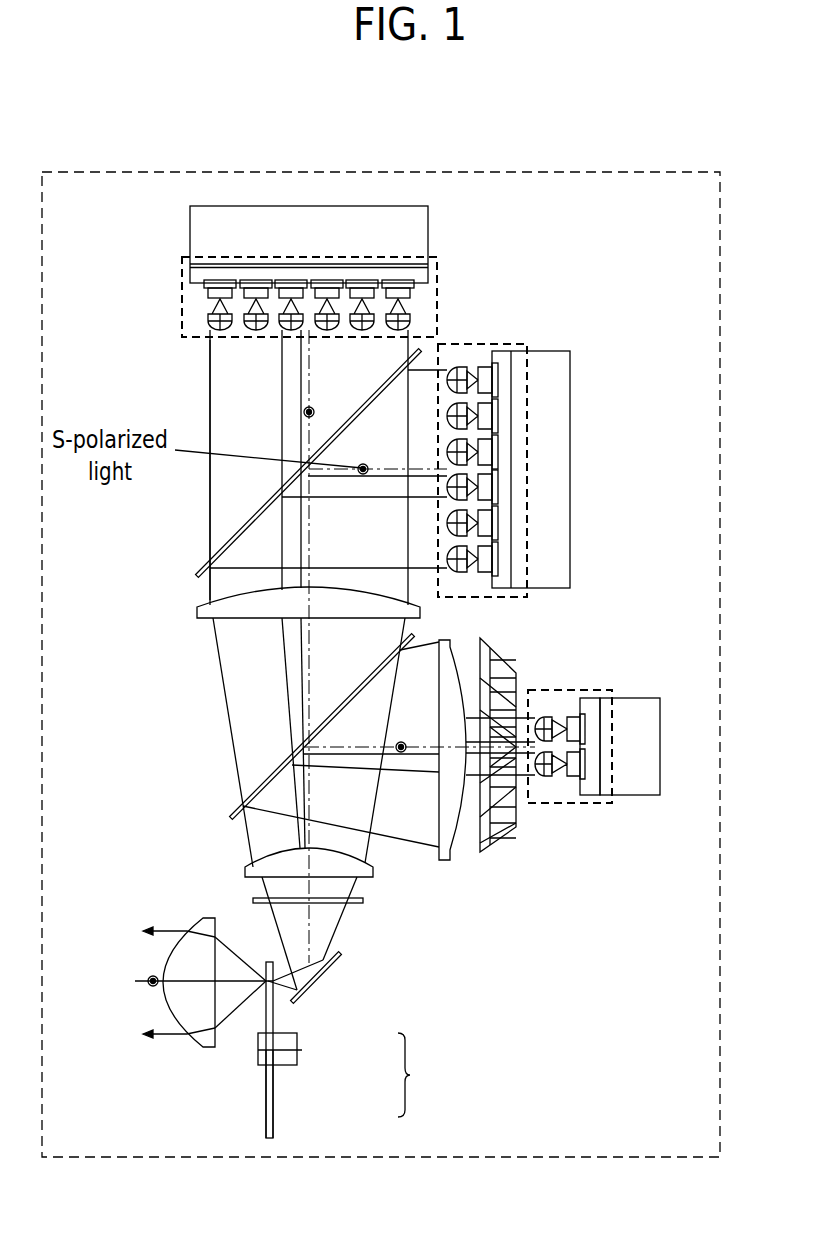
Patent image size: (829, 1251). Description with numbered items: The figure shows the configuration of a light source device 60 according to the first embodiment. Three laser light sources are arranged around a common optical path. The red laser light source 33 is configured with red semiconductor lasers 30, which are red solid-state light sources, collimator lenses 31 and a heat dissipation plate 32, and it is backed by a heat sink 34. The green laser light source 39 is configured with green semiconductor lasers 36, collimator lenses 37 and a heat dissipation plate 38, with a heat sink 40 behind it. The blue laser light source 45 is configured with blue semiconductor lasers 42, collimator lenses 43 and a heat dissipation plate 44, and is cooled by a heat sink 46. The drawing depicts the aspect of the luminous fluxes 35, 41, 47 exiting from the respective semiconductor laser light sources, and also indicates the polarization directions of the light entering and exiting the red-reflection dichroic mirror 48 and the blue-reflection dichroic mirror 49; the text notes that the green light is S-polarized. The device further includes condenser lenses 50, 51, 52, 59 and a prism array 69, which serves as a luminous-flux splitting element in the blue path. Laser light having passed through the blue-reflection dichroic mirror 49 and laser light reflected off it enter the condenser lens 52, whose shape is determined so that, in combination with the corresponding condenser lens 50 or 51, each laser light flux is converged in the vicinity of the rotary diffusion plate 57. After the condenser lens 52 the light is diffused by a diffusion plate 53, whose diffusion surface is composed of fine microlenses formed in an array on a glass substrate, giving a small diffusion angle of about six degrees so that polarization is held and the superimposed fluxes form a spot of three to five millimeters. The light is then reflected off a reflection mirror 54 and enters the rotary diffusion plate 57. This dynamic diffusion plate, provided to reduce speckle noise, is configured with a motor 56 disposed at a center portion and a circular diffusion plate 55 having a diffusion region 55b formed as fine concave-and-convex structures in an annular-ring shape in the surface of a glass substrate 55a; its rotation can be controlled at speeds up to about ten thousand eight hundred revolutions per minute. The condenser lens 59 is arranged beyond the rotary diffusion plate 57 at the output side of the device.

The red semiconductor lasers 30 is at (484, 572).
The collimator lenses 31 is at (458, 568).
The heat dissipation plate 32 is at (502, 565).
The red laser light source 33 is at (475, 342).
The heat sink 34 is at (557, 372).
The luminous flux 35 is at (353, 490).
The green semiconductor lasers 36 is at (412, 293).
The collimator lenses 37 is at (412, 318).
The heat dissipation plate 38 is at (422, 270).
The green laser light source 39 is at (177, 288).
The heat sink 40 is at (418, 218).
The luminous flux 41 is at (288, 430).
The blue semiconductor lasers 42 is at (573, 782).
The collimator lenses 43 is at (548, 778).
The heat dissipation plate 44 is at (590, 787).
The blue laser light source 45 is at (567, 688).
The heat sink 46 is at (633, 712).
The luminous flux 47 is at (519, 783).
The red-reflection dichroic mirror 48 is at (197, 568).
The blue-reflection dichroic mirror 49 is at (240, 810).
The condenser lens 50 is at (197, 610).
The condenser lens 51 is at (445, 858).
The condenser lens 52 is at (245, 867).
The diffusion plate 53 is at (253, 900).
The reflection mirror 54 is at (330, 972).
The circular diffusion plate 55 is at (273, 1087).
The glass substrate 55a is at (272, 1138).
The diffusion region 55b is at (265, 1122).
The motor 56 is at (297, 1043).
The rotary diffusion plate 57 is at (421, 1075).
The condenser lens 59 is at (210, 1048).
The light source device 60 is at (720, 485).
The prism array 69 is at (487, 853).